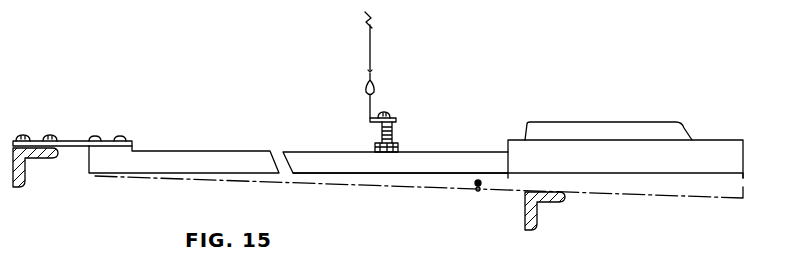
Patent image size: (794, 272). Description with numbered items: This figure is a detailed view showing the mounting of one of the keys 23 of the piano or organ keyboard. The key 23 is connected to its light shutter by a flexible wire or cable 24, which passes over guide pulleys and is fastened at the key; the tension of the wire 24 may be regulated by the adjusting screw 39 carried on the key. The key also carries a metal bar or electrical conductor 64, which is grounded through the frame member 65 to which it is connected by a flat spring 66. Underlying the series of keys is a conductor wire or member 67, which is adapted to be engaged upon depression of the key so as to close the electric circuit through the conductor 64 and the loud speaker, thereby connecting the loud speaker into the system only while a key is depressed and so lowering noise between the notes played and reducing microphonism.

The key 23 is at (652, 161).
The flexible wire or cable 24 is at (372, 38).
The adjusting screw 39 is at (392, 117).
The metal bar or electrical conductor 64 is at (197, 151).
The frame member 65 is at (25, 176).
The flat spring 66 is at (70, 141).
The conductor wire or member 67 is at (477, 186).